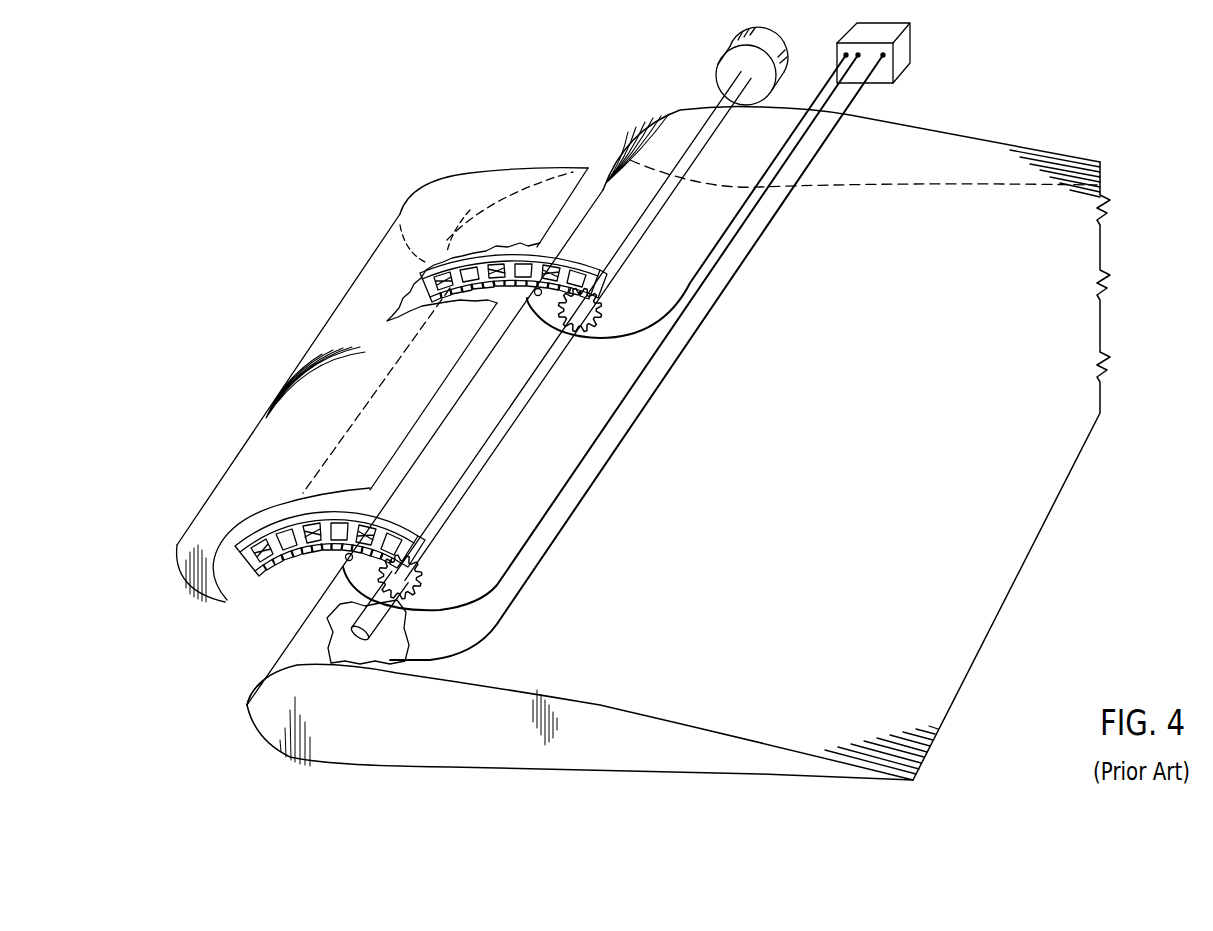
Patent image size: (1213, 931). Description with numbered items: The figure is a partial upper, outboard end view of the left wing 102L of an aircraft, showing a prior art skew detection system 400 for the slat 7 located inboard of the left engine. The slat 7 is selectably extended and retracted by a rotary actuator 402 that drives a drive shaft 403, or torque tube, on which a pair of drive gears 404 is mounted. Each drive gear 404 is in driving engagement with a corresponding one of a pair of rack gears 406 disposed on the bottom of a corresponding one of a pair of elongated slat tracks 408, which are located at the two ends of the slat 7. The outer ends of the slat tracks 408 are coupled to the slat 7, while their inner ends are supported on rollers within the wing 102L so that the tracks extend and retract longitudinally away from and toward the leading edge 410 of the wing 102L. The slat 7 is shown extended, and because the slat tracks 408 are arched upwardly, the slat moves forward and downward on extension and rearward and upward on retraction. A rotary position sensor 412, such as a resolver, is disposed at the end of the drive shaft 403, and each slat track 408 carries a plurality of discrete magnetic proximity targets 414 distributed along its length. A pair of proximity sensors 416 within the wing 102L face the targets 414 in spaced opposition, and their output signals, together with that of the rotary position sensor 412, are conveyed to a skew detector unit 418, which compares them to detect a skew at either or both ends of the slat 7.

The skew detection system 400 is at (263, 153).
The left wing 102L is at (432, 757).
The slat 7 is at (345, 327).
The rotary actuator 402 is at (722, 70).
The drive shaft 403 is at (713, 128).
The drive gears 404 is at (587, 333).
The rack gears 406 is at (262, 577).
The slat tracks 408 is at (583, 262).
The leading edge 410 is at (247, 705).
The rotary position sensor 412 is at (356, 628).
The magnetic proximity targets 414 is at (540, 258).
The proximity sensors 416 is at (534, 296).
The skew detector unit 418 is at (898, 65).